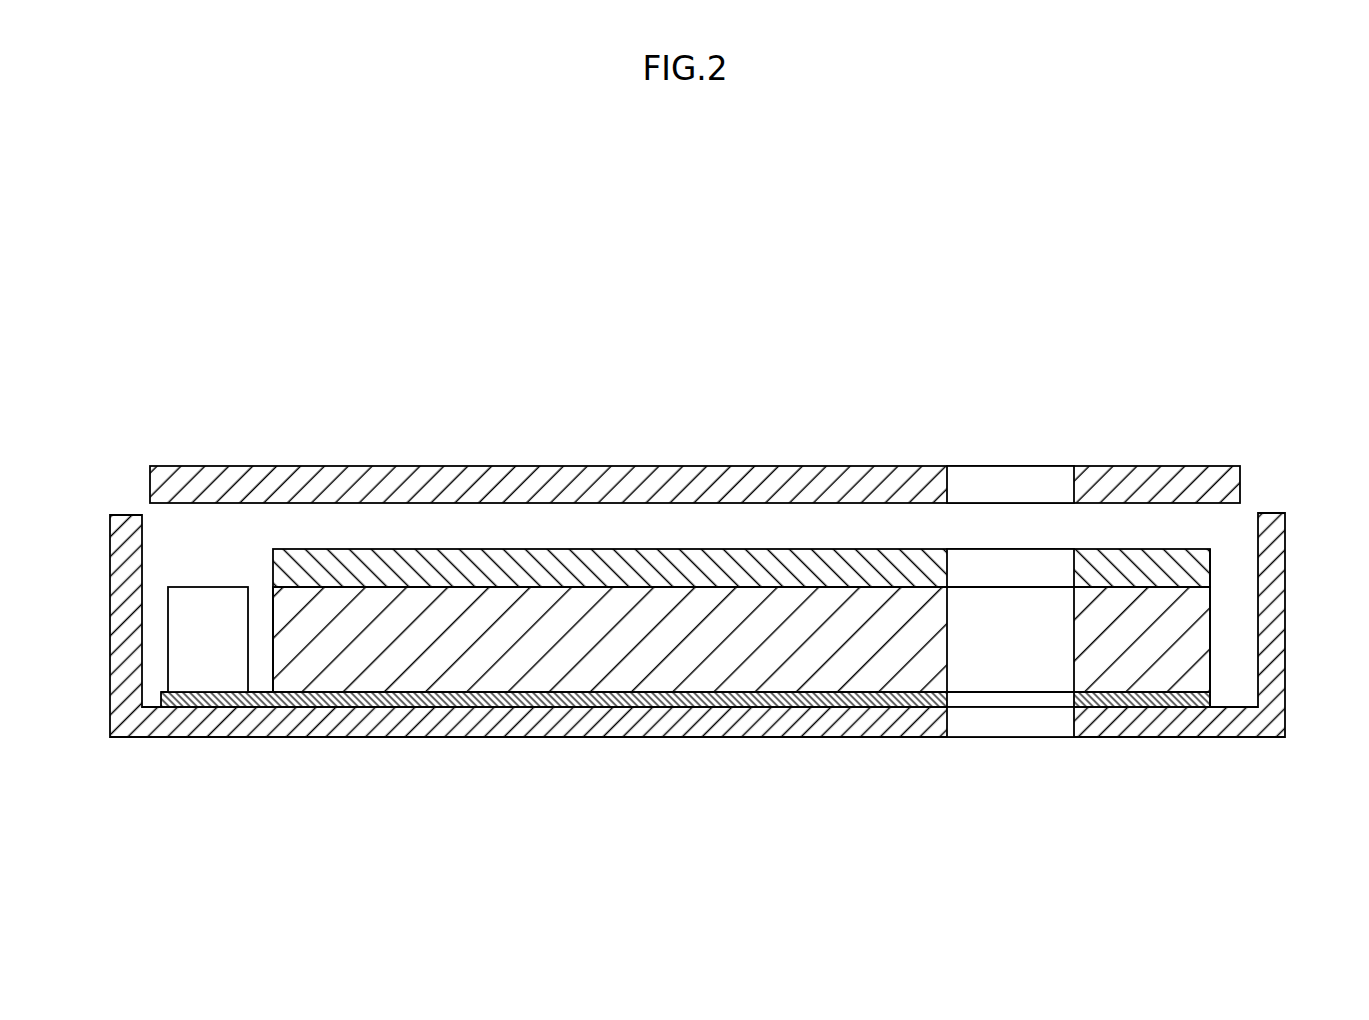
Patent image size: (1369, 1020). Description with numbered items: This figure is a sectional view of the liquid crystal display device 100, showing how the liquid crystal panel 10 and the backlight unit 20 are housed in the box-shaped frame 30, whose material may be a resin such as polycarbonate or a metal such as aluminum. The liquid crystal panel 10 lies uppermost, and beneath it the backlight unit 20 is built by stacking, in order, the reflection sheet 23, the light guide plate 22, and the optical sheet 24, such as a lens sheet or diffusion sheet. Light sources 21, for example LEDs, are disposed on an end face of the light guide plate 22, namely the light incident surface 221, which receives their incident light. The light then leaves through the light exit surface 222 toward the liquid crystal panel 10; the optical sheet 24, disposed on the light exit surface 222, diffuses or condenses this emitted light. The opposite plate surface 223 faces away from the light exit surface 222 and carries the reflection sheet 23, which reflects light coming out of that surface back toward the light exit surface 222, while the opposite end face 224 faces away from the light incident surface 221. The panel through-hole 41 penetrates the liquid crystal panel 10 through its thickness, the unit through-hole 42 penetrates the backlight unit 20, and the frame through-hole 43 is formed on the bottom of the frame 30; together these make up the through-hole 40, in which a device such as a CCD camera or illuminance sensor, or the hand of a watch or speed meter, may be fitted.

The liquid crystal display device 100 is at (1151, 253).
The liquid crystal panel 10 is at (529, 480).
The backlight unit 20 is at (621, 535).
The light sources 21 is at (195, 637).
The light guide plate 22 is at (653, 642).
The reflection sheet 23 is at (755, 703).
The optical sheet 24 is at (422, 551).
The frame 30 is at (122, 667).
The through-hole 40 is at (1003, 450).
The panel through-hole 41 is at (949, 493).
The unit through-hole 42 is at (1018, 575).
The frame through-hole 43 is at (948, 736).
The light incident surface 221 is at (272, 653).
The light exit surface 222 is at (698, 586).
The opposite plate surface 223 is at (485, 694).
The opposite end face 224 is at (1211, 650).